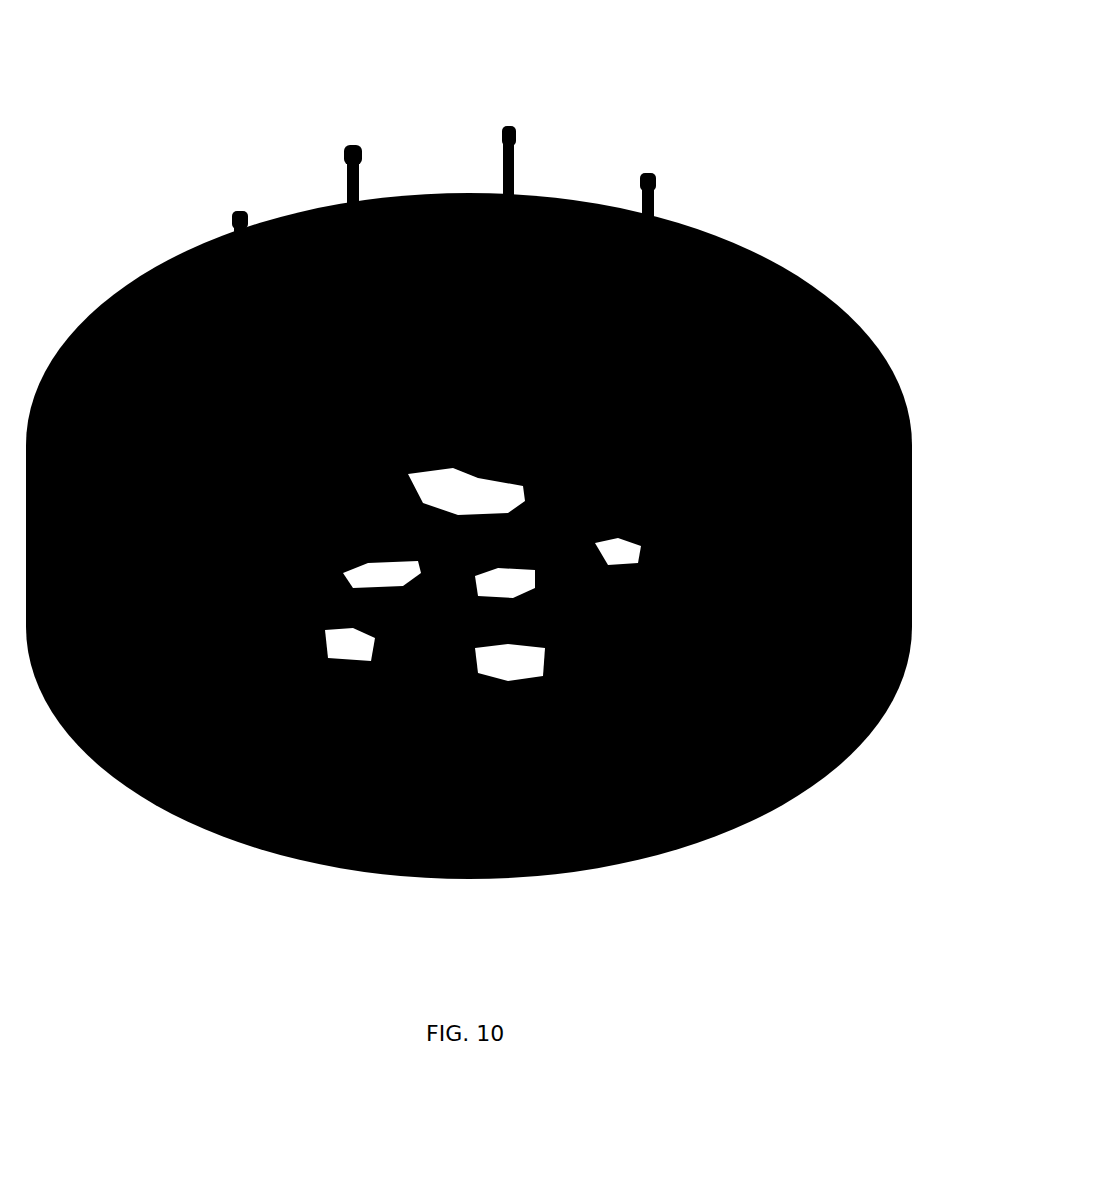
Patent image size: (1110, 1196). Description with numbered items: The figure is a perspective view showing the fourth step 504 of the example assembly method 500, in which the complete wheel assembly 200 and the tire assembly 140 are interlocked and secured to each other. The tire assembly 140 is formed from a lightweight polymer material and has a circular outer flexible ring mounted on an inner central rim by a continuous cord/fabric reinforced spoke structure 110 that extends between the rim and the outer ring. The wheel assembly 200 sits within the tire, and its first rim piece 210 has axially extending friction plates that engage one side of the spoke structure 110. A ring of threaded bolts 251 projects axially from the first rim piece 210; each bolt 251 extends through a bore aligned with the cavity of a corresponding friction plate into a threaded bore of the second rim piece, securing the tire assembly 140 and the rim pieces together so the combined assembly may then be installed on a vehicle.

The assembly method 500 is at (469, 472).
The fourth step 504 is at (774, 178).
The tire assembly 140 is at (768, 810).
The spoke structure 110 is at (797, 380).
The first rim piece 210 is at (318, 305).
The wheel assembly 200 is at (459, 476).
The bolt 251 is at (511, 154).